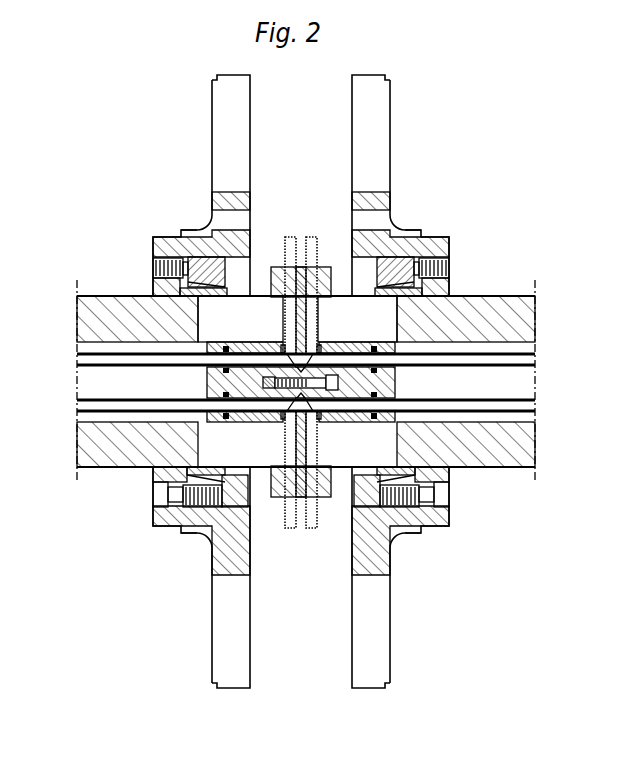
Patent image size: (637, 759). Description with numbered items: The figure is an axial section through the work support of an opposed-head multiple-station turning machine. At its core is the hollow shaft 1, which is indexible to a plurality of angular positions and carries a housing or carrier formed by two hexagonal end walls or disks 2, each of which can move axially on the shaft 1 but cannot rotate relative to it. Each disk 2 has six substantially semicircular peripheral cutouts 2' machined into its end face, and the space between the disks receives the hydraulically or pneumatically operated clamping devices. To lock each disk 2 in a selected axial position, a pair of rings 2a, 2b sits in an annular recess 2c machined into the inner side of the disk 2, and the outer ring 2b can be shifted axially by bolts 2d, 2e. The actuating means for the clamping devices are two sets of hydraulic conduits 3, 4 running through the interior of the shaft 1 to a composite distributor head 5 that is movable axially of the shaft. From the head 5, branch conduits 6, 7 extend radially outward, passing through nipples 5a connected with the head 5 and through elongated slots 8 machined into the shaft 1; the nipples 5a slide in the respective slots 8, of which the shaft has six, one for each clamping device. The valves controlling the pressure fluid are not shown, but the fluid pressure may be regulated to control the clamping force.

The hollow shaft 1 is at (83, 453).
The end wall or disk 2 is at (301, 369).
The peripheral cutout 2' is at (301, 183).
The ring 2a is at (208, 292).
The outer ring 2b is at (205, 260).
The annular recess 2c is at (397, 258).
The bolt 2d is at (160, 497).
The bolt 2e is at (155, 263).
The hydraulic conduit 3 is at (87, 404).
The hydraulic conduit 4 is at (532, 405).
The composite distributor head 5 is at (388, 343).
The nipple 5a is at (357, 319).
The branch conduit 6 is at (287, 240).
The branch conduit 7 is at (312, 238).
The elongated slot 8 is at (393, 308).